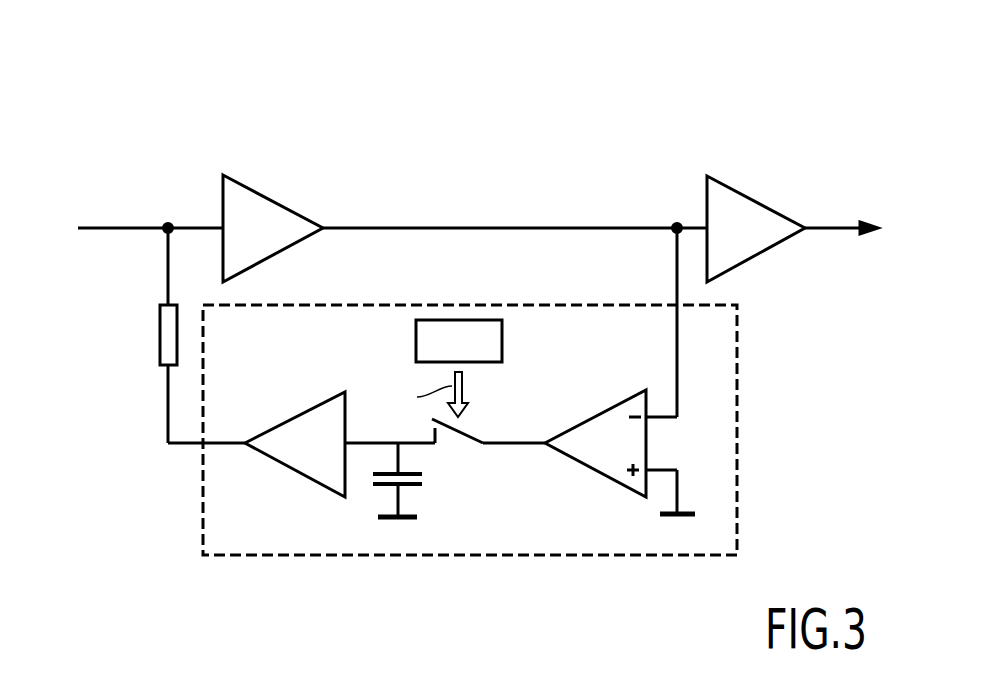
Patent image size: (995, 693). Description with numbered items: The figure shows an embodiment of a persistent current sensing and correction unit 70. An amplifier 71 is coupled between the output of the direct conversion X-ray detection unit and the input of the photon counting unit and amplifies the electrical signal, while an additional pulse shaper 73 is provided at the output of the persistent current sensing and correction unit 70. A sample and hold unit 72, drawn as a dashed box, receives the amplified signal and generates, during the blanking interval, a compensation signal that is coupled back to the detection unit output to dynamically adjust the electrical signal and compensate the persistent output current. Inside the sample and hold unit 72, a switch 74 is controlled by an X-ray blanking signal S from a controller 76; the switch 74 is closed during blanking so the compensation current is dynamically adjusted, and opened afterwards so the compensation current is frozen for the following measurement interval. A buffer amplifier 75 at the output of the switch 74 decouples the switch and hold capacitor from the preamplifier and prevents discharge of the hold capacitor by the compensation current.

The persistent current sensing and correction unit 70 is at (766, 96).
The amplifier 71 is at (292, 208).
The sample and hold unit 72 is at (737, 393).
The pulse shaper 73 is at (778, 208).
The switch 74 is at (455, 432).
The buffer amplifier 75 is at (297, 413).
The controller 76 is at (416, 330).